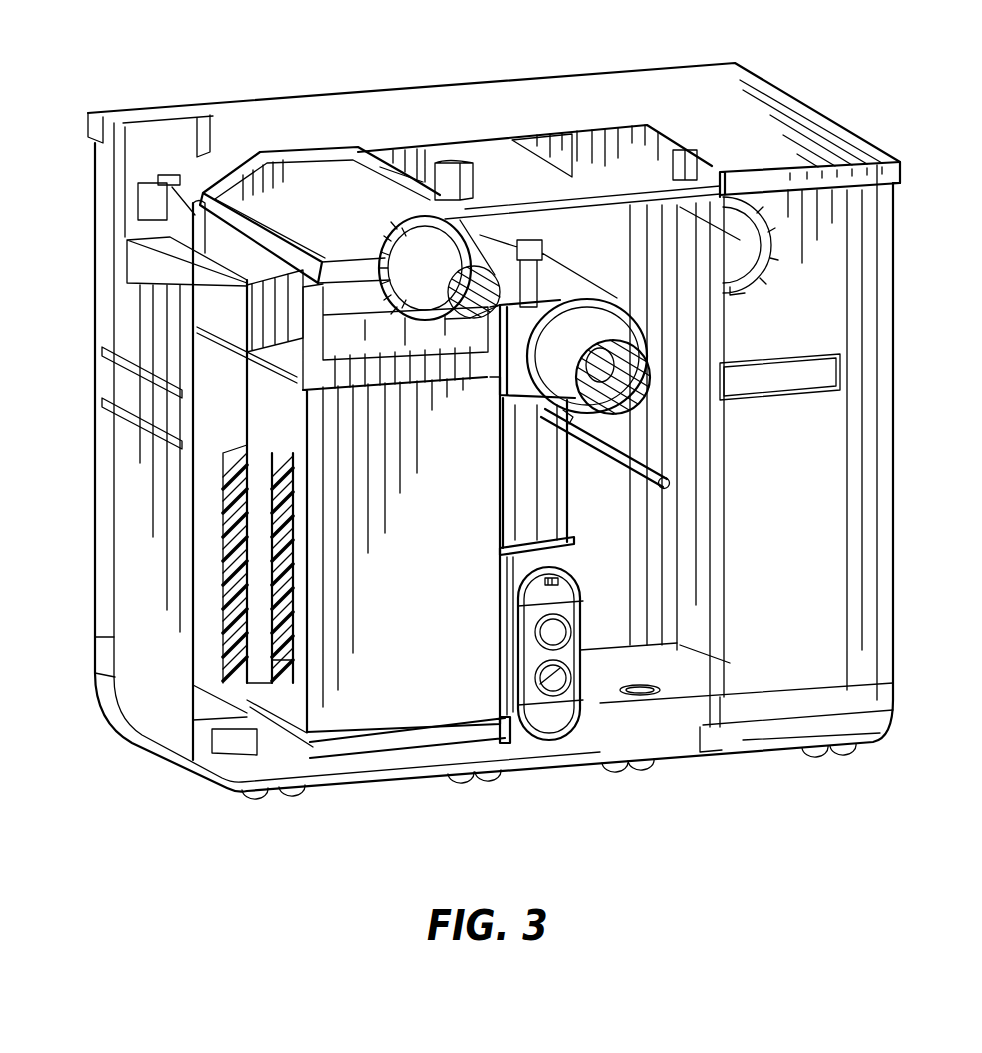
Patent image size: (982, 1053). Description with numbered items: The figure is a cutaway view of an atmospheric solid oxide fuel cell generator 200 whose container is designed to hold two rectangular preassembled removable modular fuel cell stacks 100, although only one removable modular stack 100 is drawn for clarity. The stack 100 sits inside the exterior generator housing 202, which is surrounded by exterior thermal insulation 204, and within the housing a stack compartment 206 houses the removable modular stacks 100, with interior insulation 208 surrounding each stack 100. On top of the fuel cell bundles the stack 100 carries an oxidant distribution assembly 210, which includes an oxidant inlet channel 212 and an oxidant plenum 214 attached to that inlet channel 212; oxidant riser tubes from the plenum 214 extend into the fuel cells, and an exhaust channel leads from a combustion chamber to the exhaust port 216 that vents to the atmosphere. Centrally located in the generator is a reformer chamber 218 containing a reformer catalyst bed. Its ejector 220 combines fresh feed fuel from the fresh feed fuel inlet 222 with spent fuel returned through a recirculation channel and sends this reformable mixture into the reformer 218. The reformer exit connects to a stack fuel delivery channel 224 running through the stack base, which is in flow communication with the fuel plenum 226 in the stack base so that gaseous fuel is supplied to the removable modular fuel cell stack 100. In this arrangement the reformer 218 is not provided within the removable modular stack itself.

The atmospheric solid oxide fuel cell generator 200 is at (180, 88).
The removable modular stack 100 is at (447, 703).
The exterior generator housing 202 is at (95, 448).
The exterior thermal insulation 204 is at (207, 505).
The stack compartment 206 is at (245, 668).
The interior insulation 208 is at (265, 546).
The oxidant distribution assembly 210 is at (313, 160).
The oxidant inlet channel 212 is at (535, 300).
The oxidant plenum 214 is at (260, 207).
The exhaust port 216 is at (645, 380).
The reformer chamber 218 is at (571, 743).
The ejector 220 is at (562, 520).
The fresh feed fuel inlet 222 is at (603, 460).
The stack fuel delivery channel 224 is at (636, 688).
The fuel plenum 226 is at (382, 757).